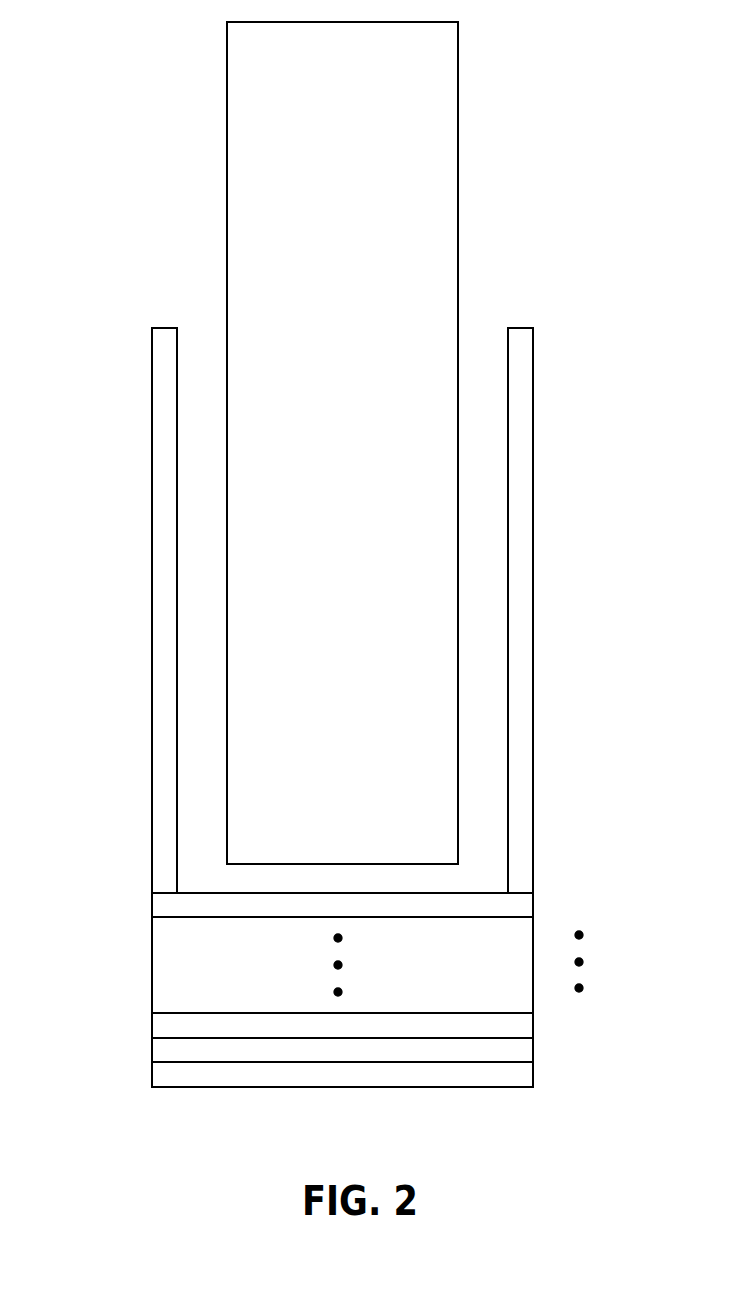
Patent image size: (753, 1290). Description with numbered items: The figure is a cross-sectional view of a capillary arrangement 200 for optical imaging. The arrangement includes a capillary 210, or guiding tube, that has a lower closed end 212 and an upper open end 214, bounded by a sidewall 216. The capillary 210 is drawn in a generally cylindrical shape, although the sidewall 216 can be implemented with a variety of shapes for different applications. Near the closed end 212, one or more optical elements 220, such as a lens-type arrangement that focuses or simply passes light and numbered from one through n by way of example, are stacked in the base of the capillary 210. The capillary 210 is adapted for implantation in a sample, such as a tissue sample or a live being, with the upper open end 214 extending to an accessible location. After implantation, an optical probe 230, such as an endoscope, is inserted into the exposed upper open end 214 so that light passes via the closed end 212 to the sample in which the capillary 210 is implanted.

The capillary arrangement 200 is at (366, 554).
The optical probe 230 is at (459, 152).
The upper open end 214 is at (137, 333).
The sidewall 216 is at (522, 328).
The capillary 210 is at (366, 698).
The lower closed end 212 is at (366, 990).
The optical elements 220 is at (603, 895).